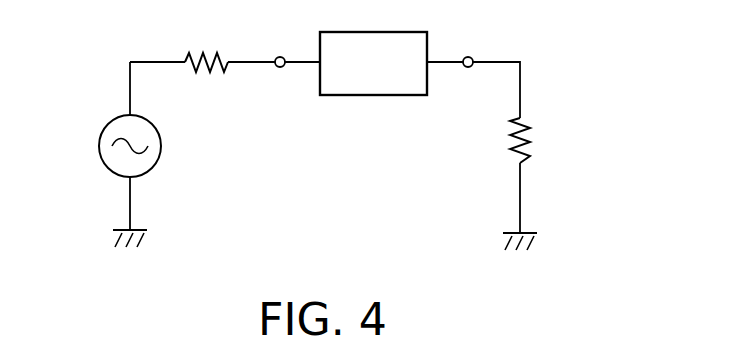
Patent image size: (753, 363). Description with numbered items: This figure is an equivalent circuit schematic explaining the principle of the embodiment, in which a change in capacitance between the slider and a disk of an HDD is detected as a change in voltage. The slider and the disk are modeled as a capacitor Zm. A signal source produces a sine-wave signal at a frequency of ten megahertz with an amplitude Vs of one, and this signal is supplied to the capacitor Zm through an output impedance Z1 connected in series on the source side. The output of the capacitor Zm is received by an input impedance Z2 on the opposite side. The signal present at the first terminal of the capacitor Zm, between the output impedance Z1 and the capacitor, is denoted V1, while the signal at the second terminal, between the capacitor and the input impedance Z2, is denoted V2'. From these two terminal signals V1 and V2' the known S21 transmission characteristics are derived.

The signal source amplitude Vs is at (100, 131).
The output impedance Z1 is at (207, 78).
The signal of the first terminal of the capacitor V1 is at (281, 56).
The capacitor Zm is at (373, 63).
The signal of the second terminal of the capacitor V2' is at (469, 36).
The input impedance Z2 is at (533, 142).